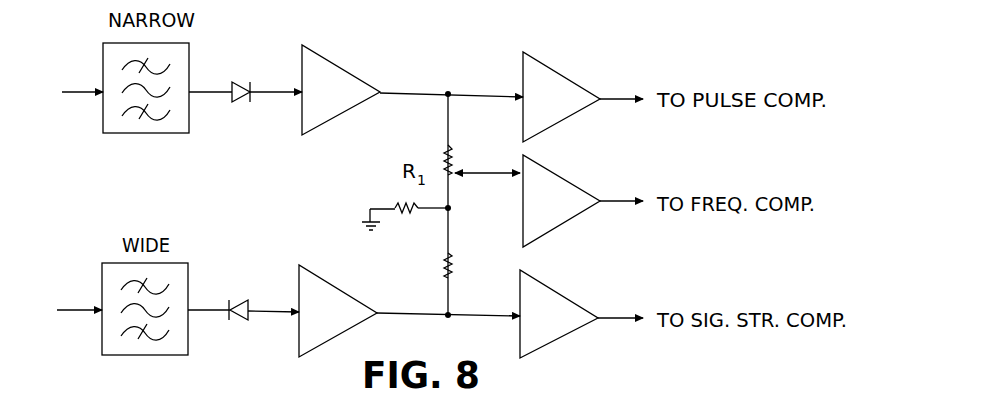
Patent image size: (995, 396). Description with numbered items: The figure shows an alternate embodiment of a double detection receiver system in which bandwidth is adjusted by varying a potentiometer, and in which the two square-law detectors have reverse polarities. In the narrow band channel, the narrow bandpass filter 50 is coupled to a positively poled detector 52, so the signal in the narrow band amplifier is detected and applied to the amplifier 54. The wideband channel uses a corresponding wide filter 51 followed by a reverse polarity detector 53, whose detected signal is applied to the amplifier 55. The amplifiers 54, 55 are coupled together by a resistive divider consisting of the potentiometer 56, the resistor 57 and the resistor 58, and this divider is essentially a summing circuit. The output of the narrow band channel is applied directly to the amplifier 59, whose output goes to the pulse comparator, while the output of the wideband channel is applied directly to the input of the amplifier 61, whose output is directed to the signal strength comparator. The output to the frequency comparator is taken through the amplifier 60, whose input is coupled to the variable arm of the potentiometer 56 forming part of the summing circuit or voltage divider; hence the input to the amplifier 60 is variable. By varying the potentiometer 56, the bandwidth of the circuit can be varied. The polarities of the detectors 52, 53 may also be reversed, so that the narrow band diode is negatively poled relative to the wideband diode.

The narrow bandpass filter 50 is at (183, 58).
The wide band filter 51 is at (191, 273).
The positively poled detector 52 is at (238, 83).
The reverse polarity detector 53 is at (239, 298).
The amplifier 54 is at (333, 64).
The amplifier 55 is at (318, 278).
The potentiometer 56 is at (445, 155).
The resistor 57 is at (445, 274).
The resistor 58 is at (421, 218).
The amplifier 59 is at (548, 67).
The amplifier 60 is at (556, 176).
The amplifier 61 is at (550, 289).